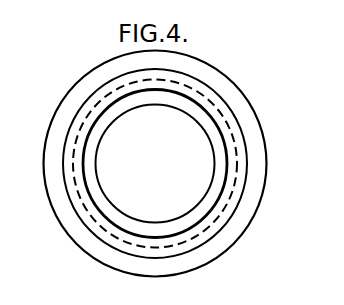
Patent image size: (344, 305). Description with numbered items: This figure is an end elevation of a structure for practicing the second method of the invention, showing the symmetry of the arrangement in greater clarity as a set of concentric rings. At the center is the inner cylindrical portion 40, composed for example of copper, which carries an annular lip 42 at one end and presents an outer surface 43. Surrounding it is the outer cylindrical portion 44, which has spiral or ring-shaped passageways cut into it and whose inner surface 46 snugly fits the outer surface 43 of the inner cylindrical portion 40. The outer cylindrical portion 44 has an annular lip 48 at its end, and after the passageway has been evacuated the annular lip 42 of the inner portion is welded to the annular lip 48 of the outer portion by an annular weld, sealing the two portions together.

The inner cylindrical portion 40 is at (221, 172).
The annular lip 42 is at (176, 235).
The outer surface 43 is at (240, 218).
The outer cylindrical portion 44 is at (247, 112).
The inner surface 46 is at (231, 237).
The annular lip 48 is at (234, 197).